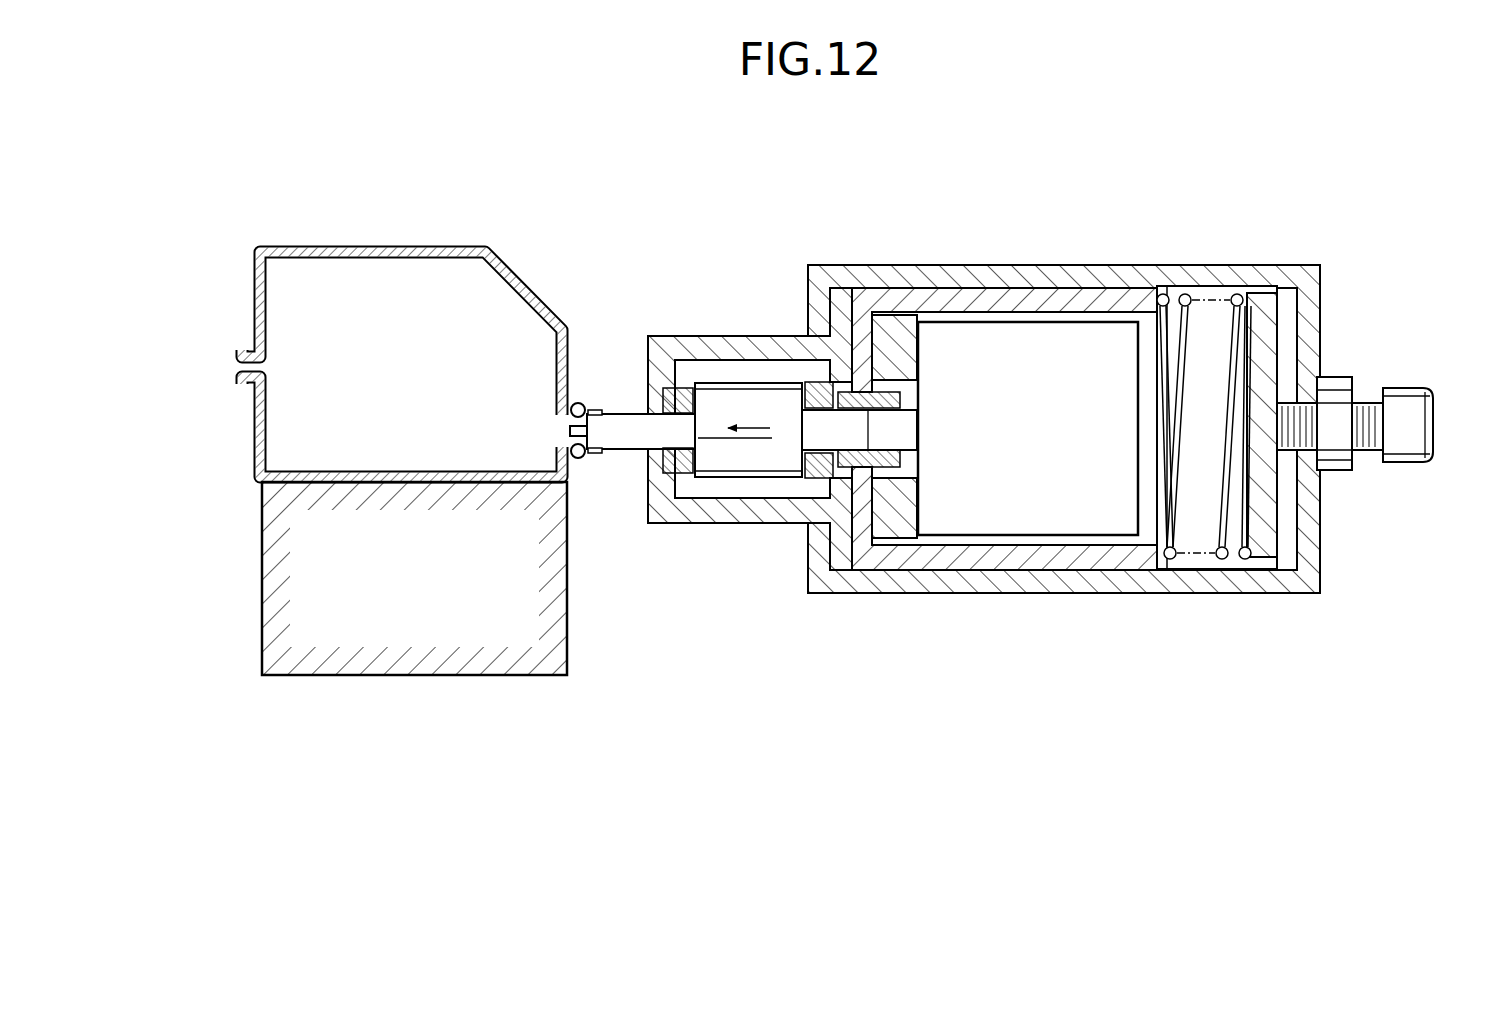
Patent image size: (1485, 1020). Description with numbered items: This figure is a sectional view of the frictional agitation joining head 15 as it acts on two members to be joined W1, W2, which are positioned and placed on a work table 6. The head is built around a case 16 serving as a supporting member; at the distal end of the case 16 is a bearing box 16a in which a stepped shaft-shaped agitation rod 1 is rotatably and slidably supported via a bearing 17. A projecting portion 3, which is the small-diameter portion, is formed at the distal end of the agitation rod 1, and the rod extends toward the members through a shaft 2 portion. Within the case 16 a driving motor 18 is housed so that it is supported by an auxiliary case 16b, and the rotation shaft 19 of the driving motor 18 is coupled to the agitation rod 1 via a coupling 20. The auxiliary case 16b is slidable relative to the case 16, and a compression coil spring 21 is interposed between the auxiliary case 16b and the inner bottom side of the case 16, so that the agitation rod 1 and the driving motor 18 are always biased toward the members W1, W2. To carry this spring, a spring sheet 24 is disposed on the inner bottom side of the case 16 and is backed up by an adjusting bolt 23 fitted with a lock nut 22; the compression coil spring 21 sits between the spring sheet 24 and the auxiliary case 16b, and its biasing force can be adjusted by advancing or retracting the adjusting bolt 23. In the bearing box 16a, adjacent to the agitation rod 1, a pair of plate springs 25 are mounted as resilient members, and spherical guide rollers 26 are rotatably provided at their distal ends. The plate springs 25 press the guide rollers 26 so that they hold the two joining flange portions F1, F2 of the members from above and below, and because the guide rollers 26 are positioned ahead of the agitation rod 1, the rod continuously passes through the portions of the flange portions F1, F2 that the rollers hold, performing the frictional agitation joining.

The member to be joined W1 is at (408, 247).
The member to be joined W2 is at (258, 470).
The joining flange portion F1 is at (250, 352).
The joining flange portion F2 is at (248, 381).
The work table 6 is at (455, 677).
The guide rollers 26 is at (582, 402).
The plate springs 25 is at (598, 411).
The projecting portion 3 is at (571, 431).
The shaft 2 is at (633, 410).
The agitation rod 1 is at (743, 381).
The bearing 17 is at (675, 525).
The bearing box 16a is at (713, 525).
The auxiliary case 16b is at (997, 569).
The case 16 is at (1100, 587).
The frictional agitation joining head 15 is at (905, 598).
The driving motor 18 is at (1038, 330).
The rotation shaft 19 is at (905, 422).
The coupling 20 is at (905, 460).
The compression coil spring 21 is at (1180, 322).
The spring sheet 24 is at (1262, 318).
The lock nut 22 is at (1343, 472).
The adjusting bolt 23 is at (1408, 387).